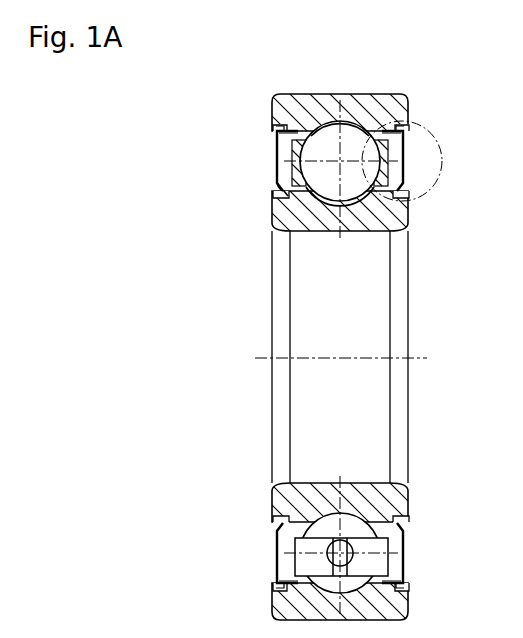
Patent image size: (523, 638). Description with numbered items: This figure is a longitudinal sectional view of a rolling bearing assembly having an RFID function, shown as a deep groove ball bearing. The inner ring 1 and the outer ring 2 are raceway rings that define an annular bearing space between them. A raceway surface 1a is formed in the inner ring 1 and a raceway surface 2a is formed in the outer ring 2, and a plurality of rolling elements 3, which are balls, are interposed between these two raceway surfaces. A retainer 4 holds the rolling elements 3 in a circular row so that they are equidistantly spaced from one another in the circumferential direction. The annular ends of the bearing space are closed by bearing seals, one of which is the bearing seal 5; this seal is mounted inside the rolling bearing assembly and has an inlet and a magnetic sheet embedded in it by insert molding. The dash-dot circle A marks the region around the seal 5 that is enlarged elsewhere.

The inner ring 1 is at (366, 232).
The raceway surface 1a is at (323, 201).
The outer ring 2 is at (352, 104).
The raceway surface 2a is at (305, 124).
The rolling element 3 is at (284, 192).
The retainer 4 is at (277, 155).
The bearing seal 5 is at (404, 143).
The detail region A is at (423, 190).